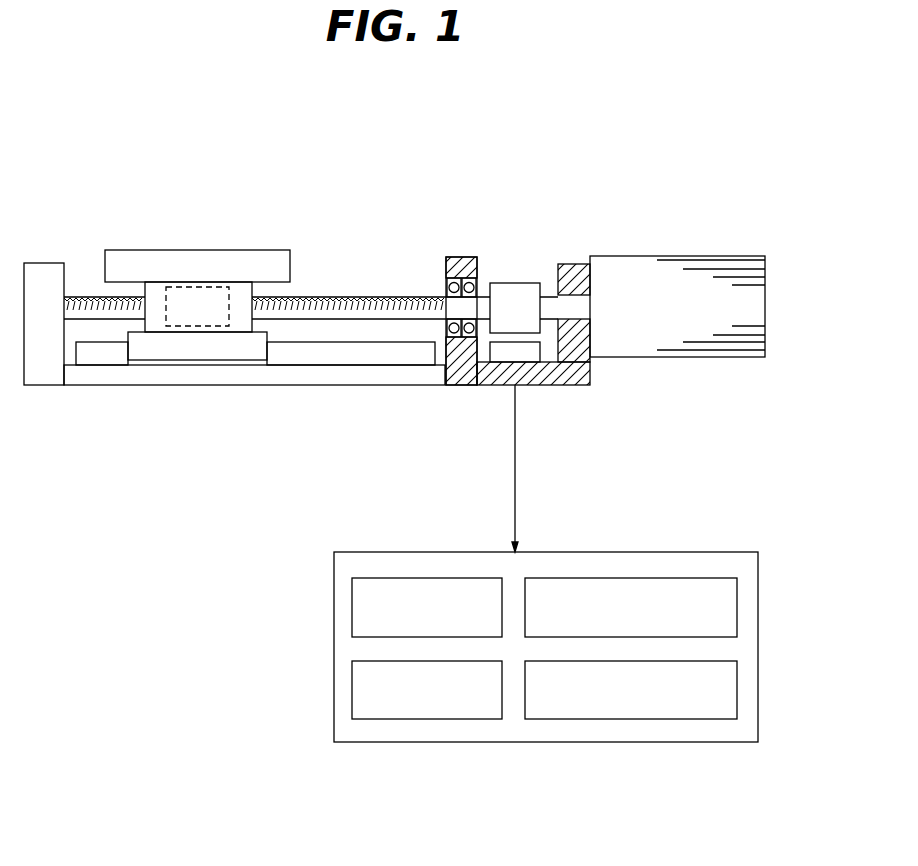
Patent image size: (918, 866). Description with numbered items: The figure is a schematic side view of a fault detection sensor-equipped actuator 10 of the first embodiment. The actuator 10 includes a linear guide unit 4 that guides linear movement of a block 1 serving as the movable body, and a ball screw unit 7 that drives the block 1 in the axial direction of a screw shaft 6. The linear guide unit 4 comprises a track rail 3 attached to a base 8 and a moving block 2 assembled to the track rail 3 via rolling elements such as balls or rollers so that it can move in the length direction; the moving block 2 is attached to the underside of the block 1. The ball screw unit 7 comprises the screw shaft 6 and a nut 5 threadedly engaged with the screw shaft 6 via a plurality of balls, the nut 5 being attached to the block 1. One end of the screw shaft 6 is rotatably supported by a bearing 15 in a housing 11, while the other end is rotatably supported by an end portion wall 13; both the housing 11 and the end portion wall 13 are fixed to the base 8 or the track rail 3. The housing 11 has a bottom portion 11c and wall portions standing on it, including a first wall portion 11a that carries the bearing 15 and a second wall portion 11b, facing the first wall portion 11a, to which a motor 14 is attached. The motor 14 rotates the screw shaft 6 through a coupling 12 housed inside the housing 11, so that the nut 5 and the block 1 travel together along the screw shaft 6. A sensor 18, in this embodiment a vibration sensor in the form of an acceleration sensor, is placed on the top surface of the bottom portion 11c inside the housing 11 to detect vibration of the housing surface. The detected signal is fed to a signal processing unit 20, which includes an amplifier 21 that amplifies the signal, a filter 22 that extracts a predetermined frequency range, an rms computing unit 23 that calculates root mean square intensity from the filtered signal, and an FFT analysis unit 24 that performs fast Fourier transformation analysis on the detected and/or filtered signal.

The block 1 is at (202, 260).
The moving block 2 is at (190, 350).
The track rail 3 is at (295, 358).
The linear guide unit 4 is at (270, 460).
The nut 5 is at (229, 287).
The screw shaft 6 is at (394, 298).
The ball screw unit 7 is at (425, 197).
The base 8 is at (369, 378).
The actuator 10 is at (637, 196).
The housing 11 is at (582, 170).
The first wall portion 11a is at (462, 268).
The second wall portion 11b is at (578, 270).
The bottom portion 11c is at (538, 380).
The coupling 12 is at (513, 300).
The end portion wall 13 is at (38, 276).
The motor 14 is at (704, 283).
The bearing 15 is at (452, 262).
The sensor 18 is at (500, 368).
The signal processing unit 20 is at (742, 648).
The amplifier 21 is at (428, 574).
The filter 22 is at (455, 722).
The rms computing unit 23 is at (630, 575).
The FFT analysis unit 24 is at (647, 722).